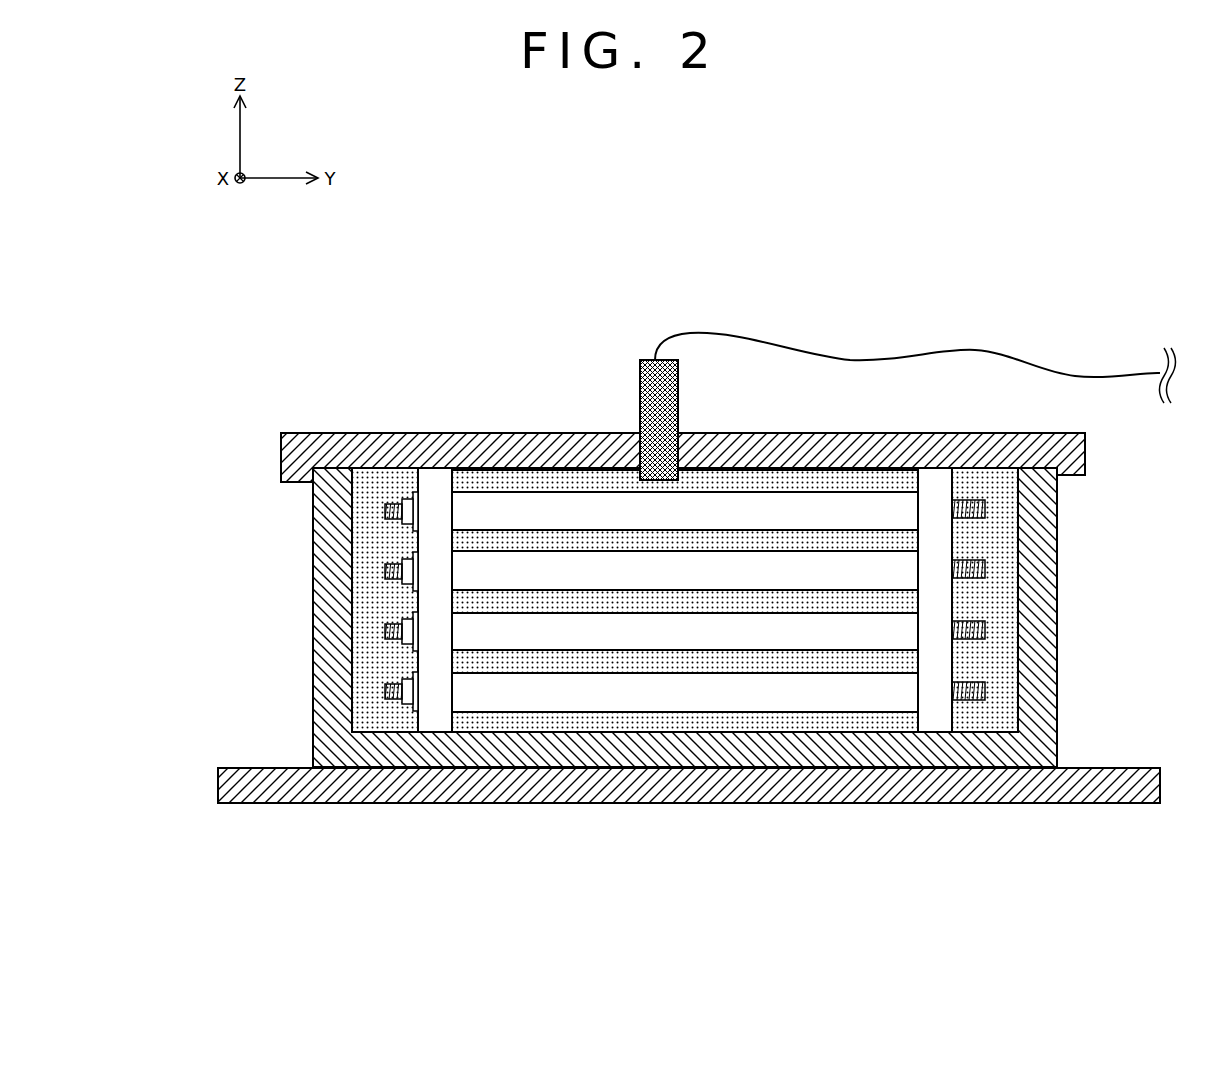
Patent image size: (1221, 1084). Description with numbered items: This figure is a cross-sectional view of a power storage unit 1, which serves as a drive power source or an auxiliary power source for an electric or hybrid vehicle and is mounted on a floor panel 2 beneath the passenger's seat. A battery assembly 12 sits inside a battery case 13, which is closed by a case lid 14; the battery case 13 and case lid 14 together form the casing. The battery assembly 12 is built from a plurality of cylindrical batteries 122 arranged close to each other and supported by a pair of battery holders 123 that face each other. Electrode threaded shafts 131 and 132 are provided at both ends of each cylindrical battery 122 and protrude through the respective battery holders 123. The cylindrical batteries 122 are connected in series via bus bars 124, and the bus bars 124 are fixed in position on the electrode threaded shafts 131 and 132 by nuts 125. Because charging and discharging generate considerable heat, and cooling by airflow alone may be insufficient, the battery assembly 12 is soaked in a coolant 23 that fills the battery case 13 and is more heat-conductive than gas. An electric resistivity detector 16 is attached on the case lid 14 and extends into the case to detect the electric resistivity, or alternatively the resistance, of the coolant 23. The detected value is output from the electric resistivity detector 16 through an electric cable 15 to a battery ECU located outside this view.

The power storage unit 1 is at (989, 237).
The floor panel 2 is at (1108, 770).
The battery assembly 12 is at (990, 588).
The battery case 13 is at (1043, 662).
The case lid 14 is at (1077, 445).
The electric cable 15 is at (847, 360).
The electric resistivity detector 16 is at (638, 385).
The coolant 23 is at (1003, 718).
The cylindrical battery 122 is at (862, 633).
The battery holder 123 is at (938, 547).
The bus bar 124 is at (413, 598).
The nut 125 is at (413, 527).
The electrode threaded shaft 131 is at (387, 513).
The electrode threaded shaft 132 is at (1030, 518).